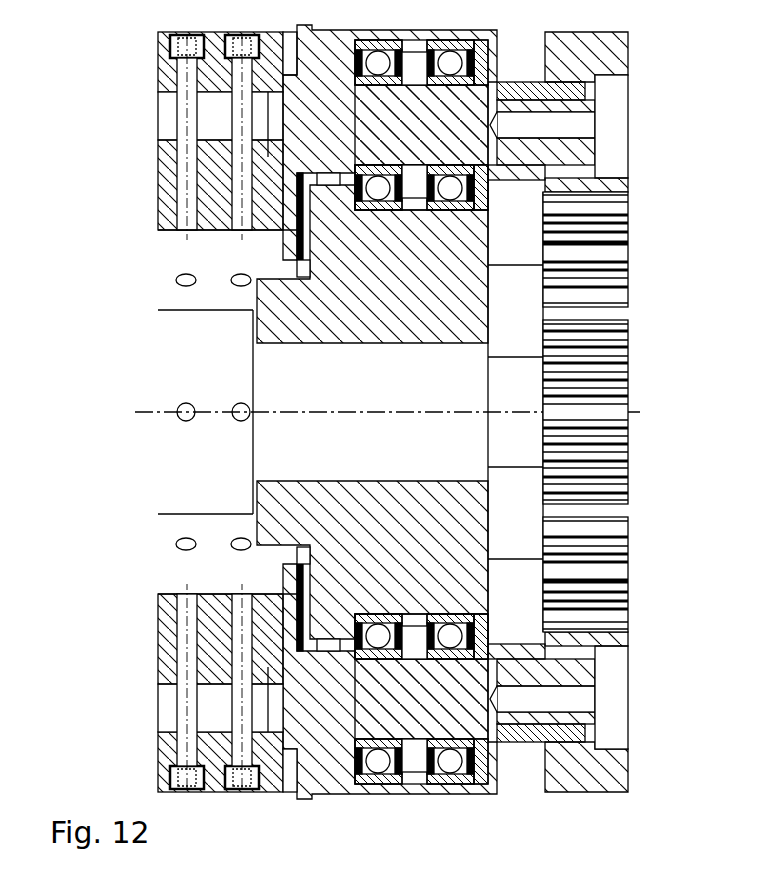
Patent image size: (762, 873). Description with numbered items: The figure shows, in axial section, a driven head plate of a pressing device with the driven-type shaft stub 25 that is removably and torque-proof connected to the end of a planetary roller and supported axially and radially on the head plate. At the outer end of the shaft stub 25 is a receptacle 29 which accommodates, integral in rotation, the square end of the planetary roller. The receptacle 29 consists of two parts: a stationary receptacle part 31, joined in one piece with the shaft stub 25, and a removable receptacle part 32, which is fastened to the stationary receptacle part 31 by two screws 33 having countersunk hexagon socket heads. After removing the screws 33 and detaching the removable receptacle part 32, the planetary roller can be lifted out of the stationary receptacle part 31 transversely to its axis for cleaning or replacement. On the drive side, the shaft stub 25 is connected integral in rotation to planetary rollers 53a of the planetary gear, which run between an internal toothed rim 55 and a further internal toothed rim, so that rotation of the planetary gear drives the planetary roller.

The removable receptacle part 32 is at (165, 78).
The receptacle 29 is at (165, 110).
The stationary receptacle part 31 is at (165, 183).
The planetary roller 53a is at (617, 251).
The internal toothed rim 55 is at (617, 398).
The shaft stub 25 is at (297, 722).
The screw 33 is at (160, 781).